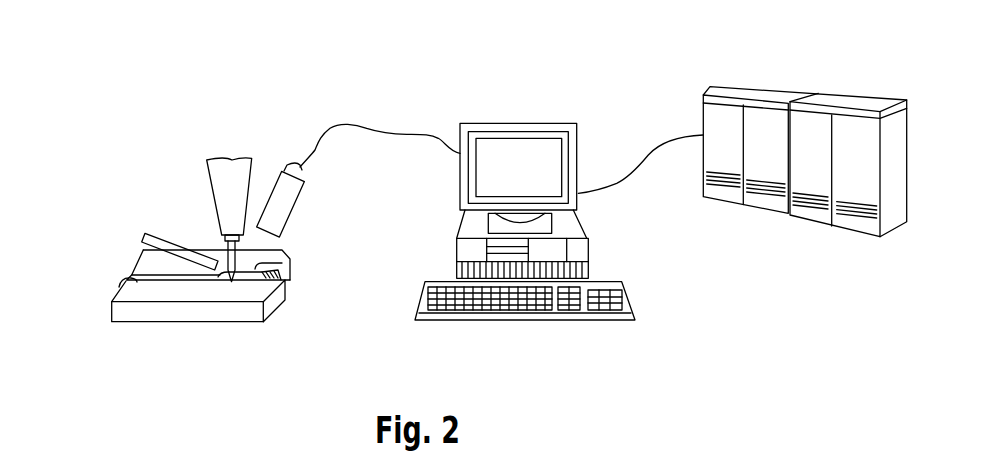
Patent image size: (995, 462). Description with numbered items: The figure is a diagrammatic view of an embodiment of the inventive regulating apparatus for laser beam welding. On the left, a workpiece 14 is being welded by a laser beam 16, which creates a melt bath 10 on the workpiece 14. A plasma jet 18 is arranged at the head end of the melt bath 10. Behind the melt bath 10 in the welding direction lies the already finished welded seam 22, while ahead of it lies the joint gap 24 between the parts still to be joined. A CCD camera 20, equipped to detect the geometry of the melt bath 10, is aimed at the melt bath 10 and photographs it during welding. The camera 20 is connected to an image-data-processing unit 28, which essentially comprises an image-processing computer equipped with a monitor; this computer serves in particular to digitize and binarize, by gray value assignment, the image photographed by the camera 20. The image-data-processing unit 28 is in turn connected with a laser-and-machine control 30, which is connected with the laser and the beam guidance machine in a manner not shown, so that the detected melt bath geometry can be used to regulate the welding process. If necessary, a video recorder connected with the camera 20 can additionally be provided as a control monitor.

The melt bath 10 is at (292, 260).
The workpiece 14 is at (255, 315).
The laser beam 16 is at (222, 273).
The plasma jet 18 is at (149, 231).
The CCD camera 20 is at (281, 175).
The welded seam 22 is at (273, 275).
The joint gap 24 is at (120, 288).
The image-data-processing unit 28 is at (515, 93).
The laser-and-machine control 30 is at (805, 93).